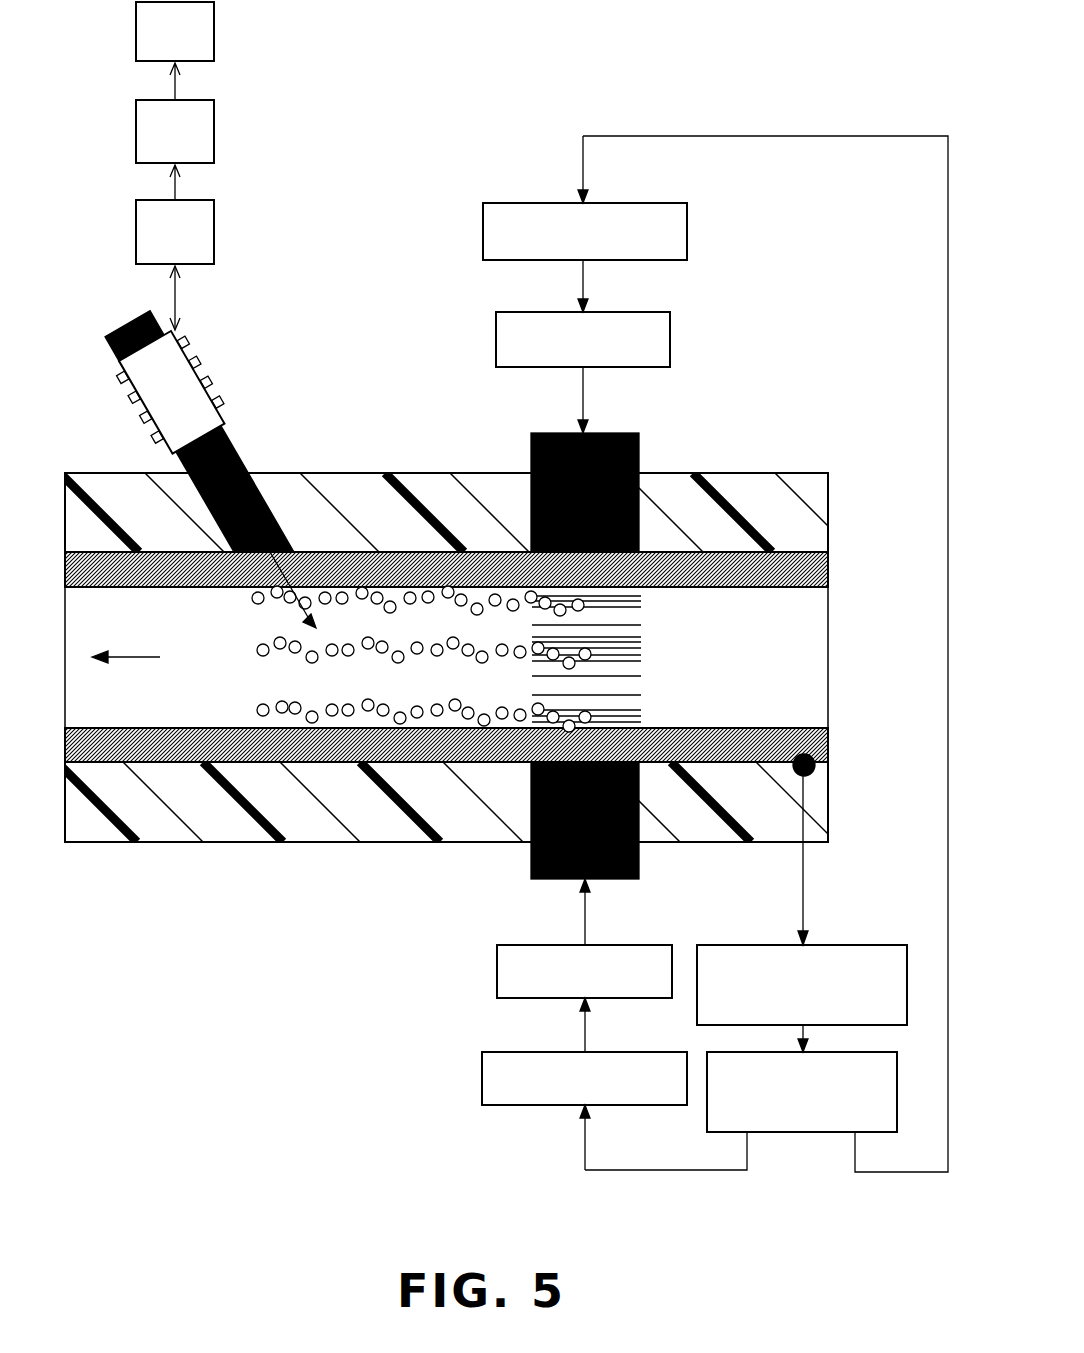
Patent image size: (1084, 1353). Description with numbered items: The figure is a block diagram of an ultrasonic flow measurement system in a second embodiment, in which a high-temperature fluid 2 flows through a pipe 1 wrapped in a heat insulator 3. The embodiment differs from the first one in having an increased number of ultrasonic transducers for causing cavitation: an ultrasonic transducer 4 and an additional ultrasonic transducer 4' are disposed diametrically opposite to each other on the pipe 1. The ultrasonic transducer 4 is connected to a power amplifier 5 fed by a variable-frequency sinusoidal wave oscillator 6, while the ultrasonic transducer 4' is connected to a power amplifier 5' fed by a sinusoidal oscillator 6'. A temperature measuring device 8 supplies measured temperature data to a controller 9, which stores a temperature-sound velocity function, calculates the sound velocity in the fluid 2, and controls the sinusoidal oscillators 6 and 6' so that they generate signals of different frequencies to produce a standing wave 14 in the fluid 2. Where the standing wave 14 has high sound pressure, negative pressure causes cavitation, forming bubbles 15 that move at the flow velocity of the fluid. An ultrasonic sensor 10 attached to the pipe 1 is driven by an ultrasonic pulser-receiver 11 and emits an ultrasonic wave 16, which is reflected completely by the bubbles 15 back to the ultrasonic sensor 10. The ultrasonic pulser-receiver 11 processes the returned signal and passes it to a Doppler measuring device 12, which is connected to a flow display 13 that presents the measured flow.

The pipe 1 is at (815, 570).
The high-temperature fluid 2 is at (810, 670).
The heat insulator 3 is at (812, 513).
The ultrasonic transducer 4 is at (533, 840).
The additional ultrasonic transducer 4' is at (632, 474).
The power amplifier 5 is at (531, 938).
The power amplifier 5' is at (636, 346).
The sinusoidal wave oscillator 6 is at (539, 1084).
The sinusoidal oscillator 6' is at (630, 198).
The temperature measuring device 8 is at (862, 943).
The controller 9 is at (795, 1132).
The ultrasonic sensor 10 is at (237, 447).
The ultrasonic pulser-receiver 11 is at (175, 232).
The Doppler measuring device 12 is at (175, 150).
The flow display 13 is at (175, 51).
The standing wave 14 is at (635, 657).
The bubbles 15 is at (290, 708).
The ultrasonic wave 16 is at (305, 623).